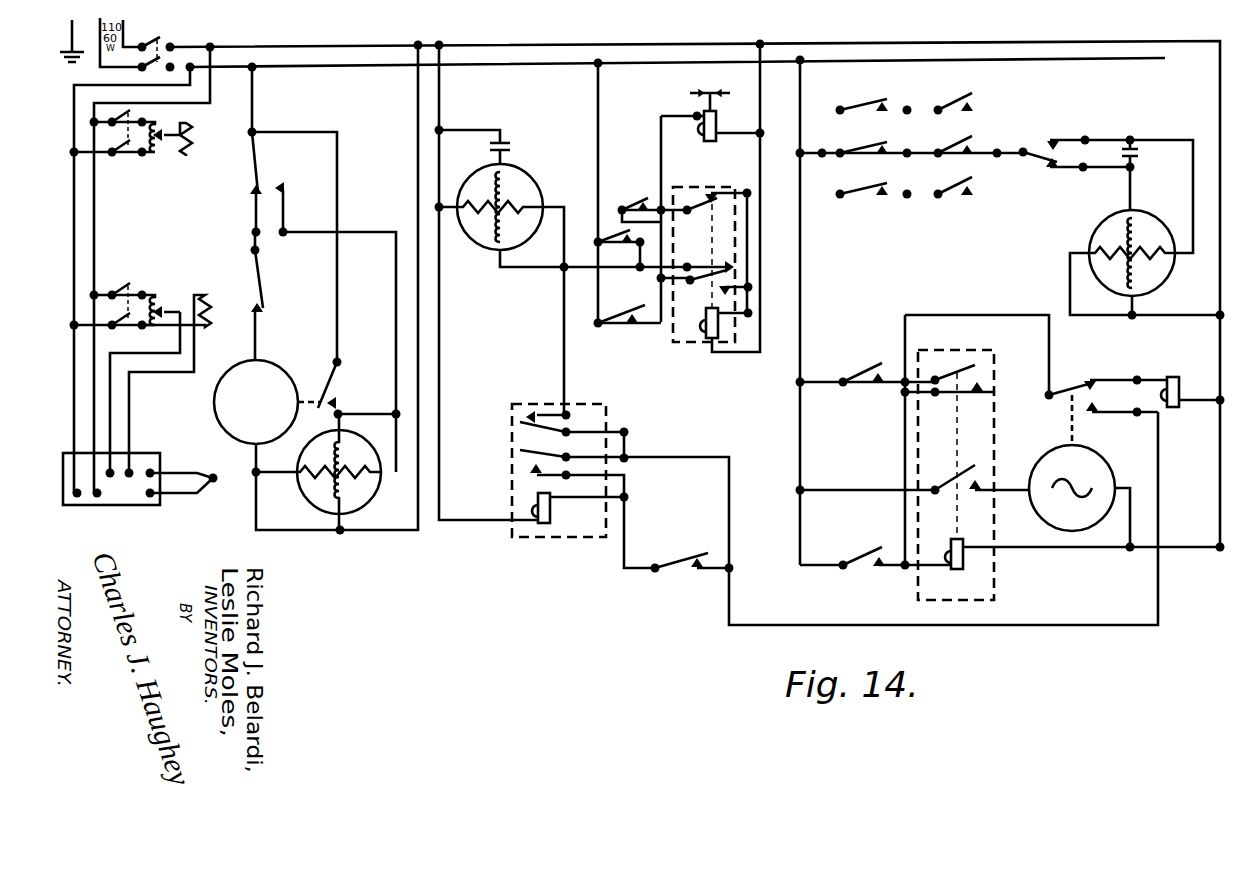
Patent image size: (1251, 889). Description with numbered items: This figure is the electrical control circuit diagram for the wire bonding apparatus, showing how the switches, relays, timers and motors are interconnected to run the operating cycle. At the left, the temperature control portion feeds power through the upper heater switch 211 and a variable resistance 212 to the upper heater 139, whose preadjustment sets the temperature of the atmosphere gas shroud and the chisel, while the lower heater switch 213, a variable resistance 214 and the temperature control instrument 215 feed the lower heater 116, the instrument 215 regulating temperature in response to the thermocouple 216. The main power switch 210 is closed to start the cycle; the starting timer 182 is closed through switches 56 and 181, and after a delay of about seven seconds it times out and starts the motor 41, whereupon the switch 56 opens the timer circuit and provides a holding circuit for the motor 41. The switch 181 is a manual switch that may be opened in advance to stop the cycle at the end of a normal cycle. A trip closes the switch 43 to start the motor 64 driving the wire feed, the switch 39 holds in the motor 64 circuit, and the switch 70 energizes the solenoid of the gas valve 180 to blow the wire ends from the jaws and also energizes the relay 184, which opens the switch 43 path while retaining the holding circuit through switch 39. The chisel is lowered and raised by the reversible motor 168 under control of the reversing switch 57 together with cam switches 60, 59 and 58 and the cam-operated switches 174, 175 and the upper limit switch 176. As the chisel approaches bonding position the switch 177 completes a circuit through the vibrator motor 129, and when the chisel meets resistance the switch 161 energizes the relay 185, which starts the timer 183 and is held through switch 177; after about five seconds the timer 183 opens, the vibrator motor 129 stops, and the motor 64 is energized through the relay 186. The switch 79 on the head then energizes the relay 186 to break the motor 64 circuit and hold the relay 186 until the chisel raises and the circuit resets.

The main power switch 210 is at (160, 38).
The upper heater switch 211 is at (122, 113).
The variable resistance 212 is at (160, 119).
The upper heater 139 is at (194, 148).
The switch 56 is at (255, 170).
The lower heater switch 213 is at (127, 289).
The variable resistance 214 is at (153, 298).
The lower heater 116 is at (215, 316).
The switch 181 is at (263, 292).
The starting timer 182 is at (280, 364).
The temperature control instrument 215 is at (120, 498).
The thermocouple 216 is at (213, 483).
The motor 41 is at (364, 497).
The motor 64 is at (480, 240).
The switch 39 is at (612, 232).
The switch 70 is at (640, 196).
The switch 43 is at (615, 313).
The gas valve 180 is at (710, 92).
The relay 184 is at (676, 344).
The relay 186 is at (514, 539).
The switch 79 is at (679, 562).
The switch 174 is at (861, 99).
The switch 175 is at (861, 147).
The upper limit switch 176 is at (861, 189).
The switch 60 is at (954, 108).
The switch 59 is at (955, 152).
The switch 58 is at (955, 196).
The switch 57 is at (1040, 148).
The motor 168 is at (1160, 278).
The switch 177 is at (860, 374).
The relay 185 is at (918, 600).
The switch 161 is at (857, 571).
The timer 183 is at (1046, 511).
The vibrator motor 129 is at (1176, 408).